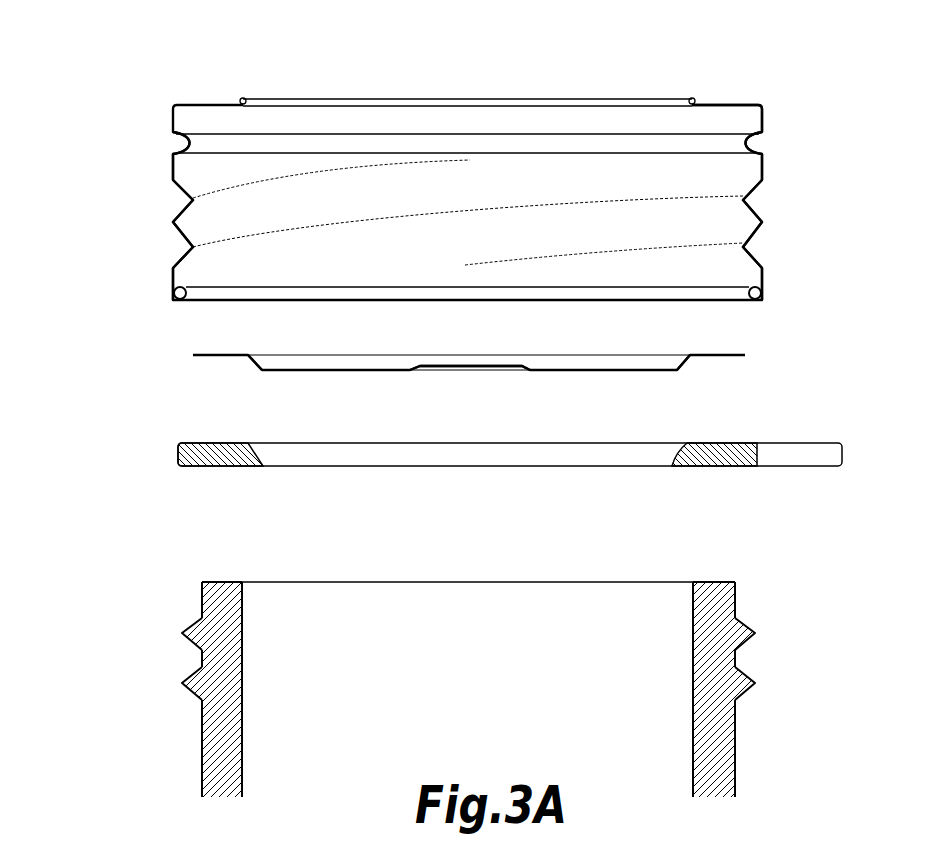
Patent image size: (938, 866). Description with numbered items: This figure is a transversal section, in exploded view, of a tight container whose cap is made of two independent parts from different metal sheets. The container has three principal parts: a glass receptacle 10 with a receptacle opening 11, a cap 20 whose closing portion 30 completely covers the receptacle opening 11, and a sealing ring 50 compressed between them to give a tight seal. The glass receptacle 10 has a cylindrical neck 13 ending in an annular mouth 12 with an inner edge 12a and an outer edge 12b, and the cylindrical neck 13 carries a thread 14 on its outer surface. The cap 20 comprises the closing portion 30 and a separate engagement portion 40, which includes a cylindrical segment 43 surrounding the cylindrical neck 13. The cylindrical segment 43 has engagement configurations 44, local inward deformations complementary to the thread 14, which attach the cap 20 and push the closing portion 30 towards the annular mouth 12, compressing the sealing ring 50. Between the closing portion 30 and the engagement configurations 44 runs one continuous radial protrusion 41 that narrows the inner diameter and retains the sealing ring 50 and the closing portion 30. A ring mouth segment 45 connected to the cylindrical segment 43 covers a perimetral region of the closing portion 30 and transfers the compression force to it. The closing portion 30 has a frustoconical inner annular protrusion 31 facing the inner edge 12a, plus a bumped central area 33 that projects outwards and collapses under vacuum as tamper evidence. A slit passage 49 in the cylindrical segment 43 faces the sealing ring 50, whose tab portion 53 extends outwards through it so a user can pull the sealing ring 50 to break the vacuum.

The glass receptacle 10 is at (190, 743).
The receptacle opening 11 is at (426, 582).
The annular mouth 12 is at (218, 582).
The inner edge 12a is at (245, 582).
The outer edge 12b is at (200, 582).
The cylindrical neck 13 is at (200, 599).
The thread 14 is at (182, 636).
The cap 20 is at (165, 62).
The closing portion 30 is at (332, 370).
The inner annular protrusion 31 is at (262, 365).
The bumped central area 33 is at (466, 366).
The engagement portion 40 is at (100, 70).
The radial protrusion 41 is at (187, 142).
The cylindrical segment 43 is at (173, 164).
The engagement configurations 44 is at (188, 202).
The ring mouth segment 45 is at (210, 104).
The slit passage 49 is at (766, 122).
The sealing ring 50 is at (225, 451).
The tab portion 53 is at (813, 453).